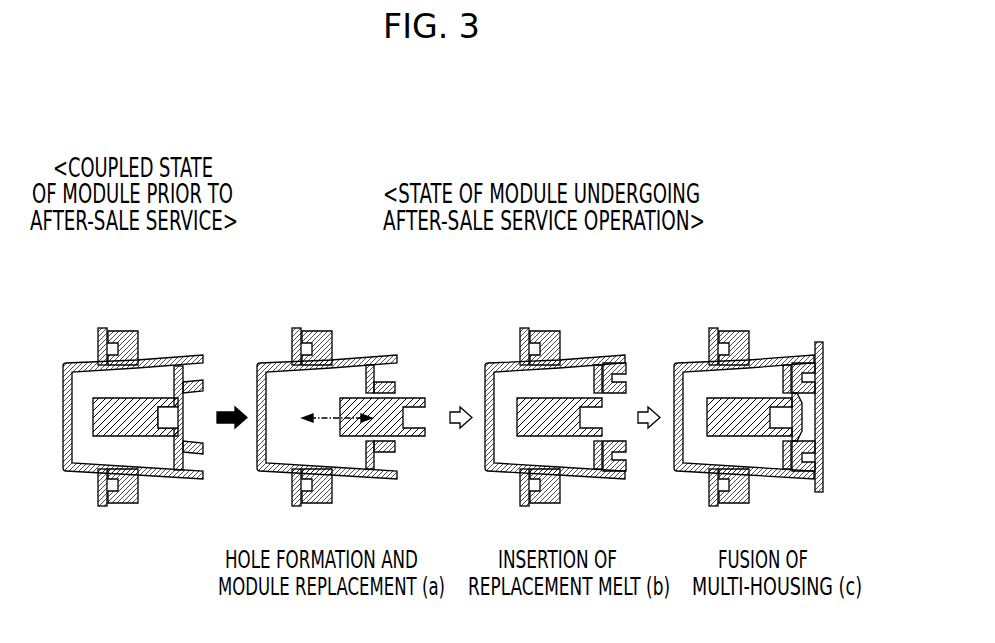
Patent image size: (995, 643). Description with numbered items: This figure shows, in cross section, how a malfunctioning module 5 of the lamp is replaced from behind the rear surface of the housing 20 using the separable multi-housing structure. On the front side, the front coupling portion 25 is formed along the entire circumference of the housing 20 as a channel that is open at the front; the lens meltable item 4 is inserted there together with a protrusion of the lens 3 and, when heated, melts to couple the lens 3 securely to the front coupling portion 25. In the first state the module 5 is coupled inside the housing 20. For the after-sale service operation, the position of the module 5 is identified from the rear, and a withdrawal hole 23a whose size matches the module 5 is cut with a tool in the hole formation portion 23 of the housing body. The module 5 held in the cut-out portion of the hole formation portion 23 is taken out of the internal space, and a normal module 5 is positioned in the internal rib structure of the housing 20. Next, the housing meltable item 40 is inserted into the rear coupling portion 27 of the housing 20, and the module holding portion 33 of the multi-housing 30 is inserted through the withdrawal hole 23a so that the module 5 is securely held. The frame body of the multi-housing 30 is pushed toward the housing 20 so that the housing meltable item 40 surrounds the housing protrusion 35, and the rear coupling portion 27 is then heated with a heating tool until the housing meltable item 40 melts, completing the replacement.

The lens 3 is at (85, 362).
The lens meltable item 4 is at (108, 330).
The front coupling portion 25 is at (120, 330).
The housing 20 is at (158, 362).
The hole formation portion 23 is at (180, 413).
The withdrawal hole 23a is at (367, 388).
The module 5 is at (102, 428).
The rear coupling portion 27 is at (617, 358).
The housing meltable item 40 is at (628, 367).
The multi-housing 30 is at (820, 342).
The module holding portion 33 is at (803, 417).
The housing protrusion 35 is at (814, 460).